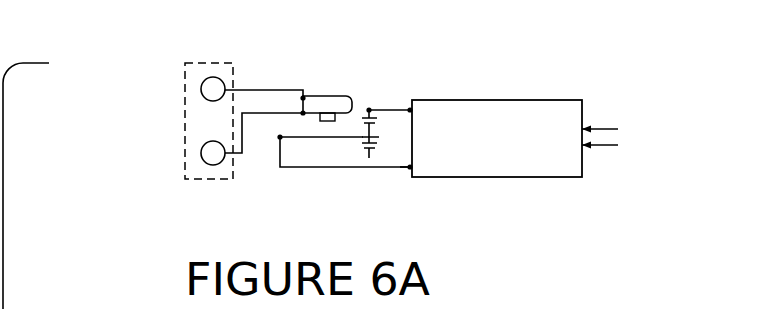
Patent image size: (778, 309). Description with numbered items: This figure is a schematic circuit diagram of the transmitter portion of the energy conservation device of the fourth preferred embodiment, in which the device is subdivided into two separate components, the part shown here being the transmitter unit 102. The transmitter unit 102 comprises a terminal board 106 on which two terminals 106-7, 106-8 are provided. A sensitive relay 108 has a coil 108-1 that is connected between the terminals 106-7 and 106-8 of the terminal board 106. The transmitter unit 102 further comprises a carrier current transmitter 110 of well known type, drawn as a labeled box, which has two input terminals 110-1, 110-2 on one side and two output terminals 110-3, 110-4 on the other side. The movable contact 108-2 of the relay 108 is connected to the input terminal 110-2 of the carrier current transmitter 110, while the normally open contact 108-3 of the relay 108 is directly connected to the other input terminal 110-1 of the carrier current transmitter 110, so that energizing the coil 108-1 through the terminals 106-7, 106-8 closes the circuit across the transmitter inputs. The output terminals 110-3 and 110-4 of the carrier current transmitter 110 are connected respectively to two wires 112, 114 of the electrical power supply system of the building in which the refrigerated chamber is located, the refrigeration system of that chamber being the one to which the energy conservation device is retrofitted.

The transmitter unit 102 is at (556, 260).
The terminal board 106 is at (234, 62).
The terminal 106-7 is at (202, 152).
The terminal 106-8 is at (200, 88).
The sensitive relay 108 is at (391, 48).
The coil 108-1 is at (337, 101).
The movable contact 108-2 is at (297, 139).
The normally open contact 108-3 is at (370, 108).
The carrier current transmitter 110 is at (533, 85).
The input terminal 110-1 is at (409, 113).
The input terminal 110-2 is at (411, 172).
The output terminal 110-3 is at (585, 125).
The output terminal 110-4 is at (585, 149).
The wire 112 is at (618, 129).
The wire 114 is at (618, 145).